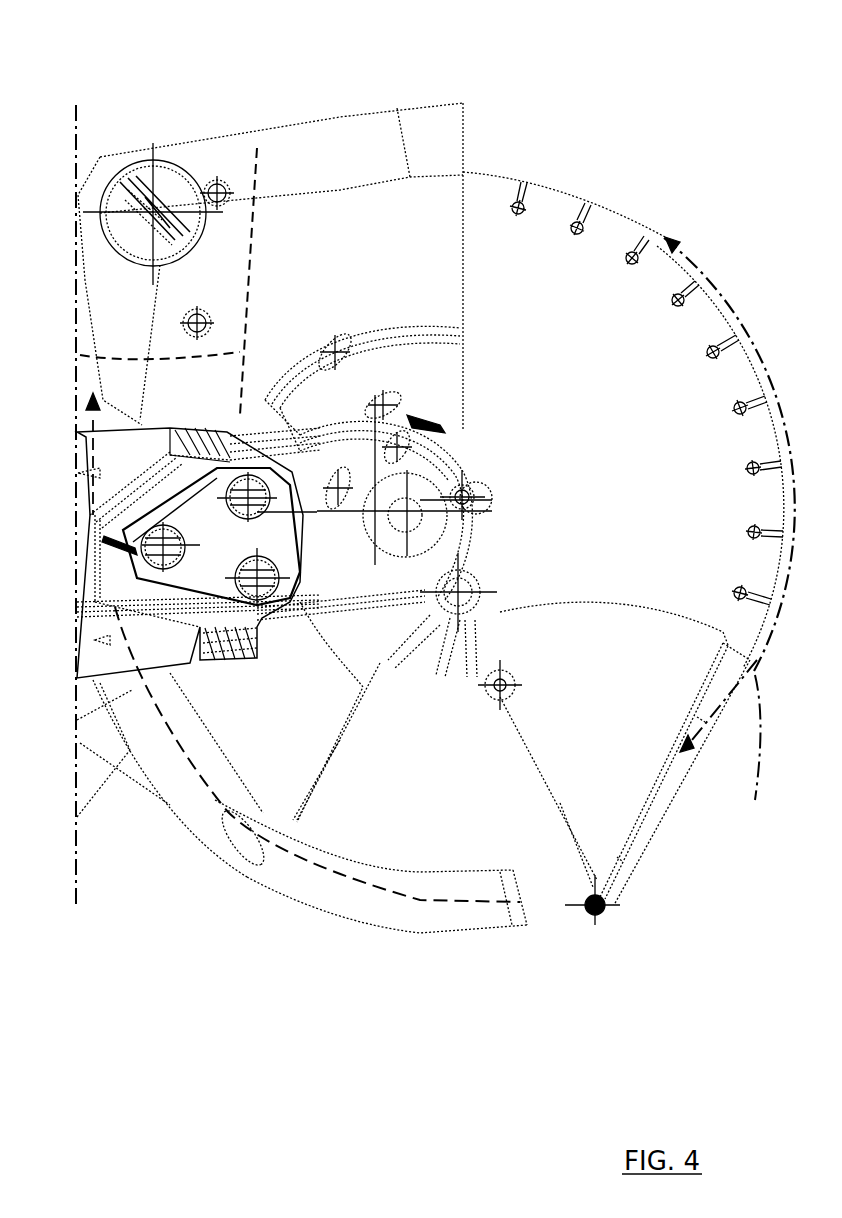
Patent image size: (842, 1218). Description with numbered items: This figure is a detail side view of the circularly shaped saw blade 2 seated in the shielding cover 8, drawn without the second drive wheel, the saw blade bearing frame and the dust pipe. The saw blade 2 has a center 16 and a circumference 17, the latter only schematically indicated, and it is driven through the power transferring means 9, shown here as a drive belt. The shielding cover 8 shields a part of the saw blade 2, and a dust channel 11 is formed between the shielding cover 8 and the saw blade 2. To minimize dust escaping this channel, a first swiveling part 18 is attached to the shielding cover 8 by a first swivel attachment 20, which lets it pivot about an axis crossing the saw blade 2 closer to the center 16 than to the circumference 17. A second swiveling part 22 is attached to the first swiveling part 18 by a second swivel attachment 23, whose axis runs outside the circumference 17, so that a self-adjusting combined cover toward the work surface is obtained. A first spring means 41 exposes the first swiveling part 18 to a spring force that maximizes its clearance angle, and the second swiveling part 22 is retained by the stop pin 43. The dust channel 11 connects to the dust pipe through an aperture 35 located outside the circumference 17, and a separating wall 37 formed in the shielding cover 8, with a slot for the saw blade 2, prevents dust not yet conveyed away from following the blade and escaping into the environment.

The saw blade 2 is at (489, 258).
The shielding cover 8 is at (283, 255).
The power transferring means 9 is at (323, 432).
The dust channel 11 is at (228, 812).
The center 16 is at (463, 495).
The circumference 17 is at (652, 509).
The first swiveling part 18 is at (400, 823).
The first swivel attachment 20 is at (464, 588).
The second swiveling part 22 is at (616, 748).
The second swivel attachment 23 is at (588, 917).
The aperture 35 is at (167, 178).
The separating wall 37 is at (80, 355).
The first spring means 41 is at (437, 650).
The stop pin 43 is at (501, 690).